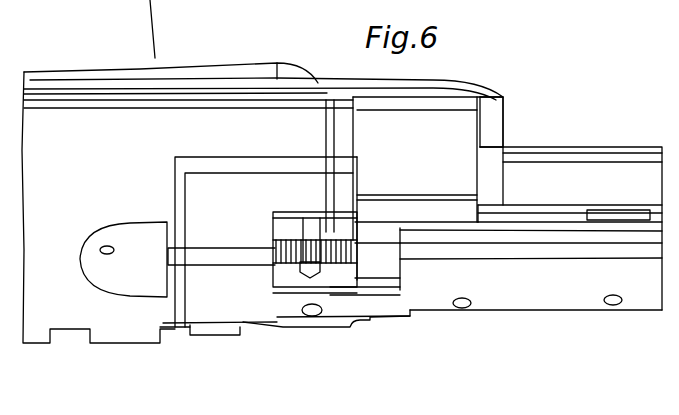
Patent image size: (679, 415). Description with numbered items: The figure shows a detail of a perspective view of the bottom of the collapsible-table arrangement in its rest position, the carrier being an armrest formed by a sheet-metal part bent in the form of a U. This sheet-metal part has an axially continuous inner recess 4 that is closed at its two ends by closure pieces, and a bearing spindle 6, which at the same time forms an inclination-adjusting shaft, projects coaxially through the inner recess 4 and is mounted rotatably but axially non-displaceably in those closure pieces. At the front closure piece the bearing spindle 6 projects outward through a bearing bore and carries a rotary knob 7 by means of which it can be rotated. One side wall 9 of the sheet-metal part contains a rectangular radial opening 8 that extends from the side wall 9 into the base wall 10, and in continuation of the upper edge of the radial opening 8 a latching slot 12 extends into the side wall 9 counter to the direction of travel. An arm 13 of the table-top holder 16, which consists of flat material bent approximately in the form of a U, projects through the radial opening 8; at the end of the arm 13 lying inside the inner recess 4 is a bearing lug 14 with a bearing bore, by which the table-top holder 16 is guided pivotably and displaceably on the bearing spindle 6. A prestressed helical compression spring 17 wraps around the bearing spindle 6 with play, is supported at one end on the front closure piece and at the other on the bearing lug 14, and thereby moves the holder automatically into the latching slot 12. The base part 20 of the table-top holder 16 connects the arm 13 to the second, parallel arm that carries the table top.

The inner recess 4 is at (332, 225).
The bearing spindle 6 is at (182, 262).
The rotary knob 7 is at (105, 272).
The radial opening 8 is at (332, 277).
The side wall 9 is at (570, 190).
The base wall 10 is at (567, 280).
The latching slot 12 is at (527, 215).
The arm 13 is at (397, 314).
The bearing lug 14 is at (385, 265).
The table-top holder 16 is at (484, 140).
The helical compression spring 17 is at (288, 263).
The base part 20 is at (440, 155).